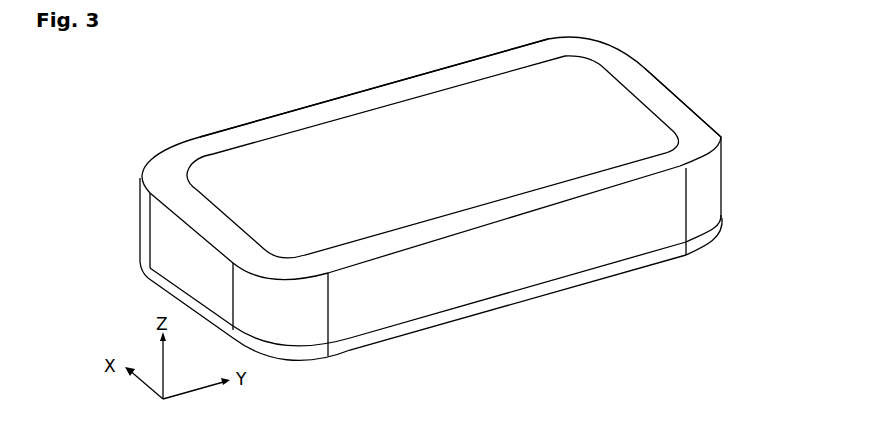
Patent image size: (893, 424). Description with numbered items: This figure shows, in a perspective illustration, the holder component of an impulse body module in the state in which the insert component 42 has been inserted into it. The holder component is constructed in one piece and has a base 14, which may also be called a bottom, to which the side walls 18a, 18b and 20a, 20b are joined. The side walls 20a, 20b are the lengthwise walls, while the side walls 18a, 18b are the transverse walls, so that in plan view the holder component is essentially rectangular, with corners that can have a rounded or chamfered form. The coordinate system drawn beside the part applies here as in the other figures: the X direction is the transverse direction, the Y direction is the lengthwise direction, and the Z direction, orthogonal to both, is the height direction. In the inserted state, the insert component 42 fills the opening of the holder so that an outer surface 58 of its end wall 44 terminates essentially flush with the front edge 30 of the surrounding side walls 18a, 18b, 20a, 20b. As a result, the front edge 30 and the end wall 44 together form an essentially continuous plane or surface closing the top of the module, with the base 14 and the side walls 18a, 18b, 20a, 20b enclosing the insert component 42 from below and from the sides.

The base 14 is at (540, 297).
The side wall 18a is at (673, 90).
The side wall 18b is at (187, 265).
The side wall 20a is at (483, 284).
The side wall 20b is at (302, 108).
The front edge 30 is at (205, 150).
The insert component 42 is at (645, 55).
The end wall 44 is at (545, 117).
The outer surface 58 is at (408, 147).